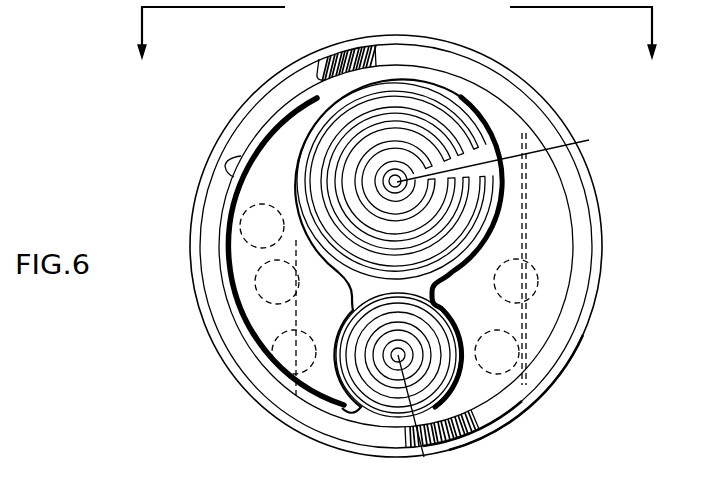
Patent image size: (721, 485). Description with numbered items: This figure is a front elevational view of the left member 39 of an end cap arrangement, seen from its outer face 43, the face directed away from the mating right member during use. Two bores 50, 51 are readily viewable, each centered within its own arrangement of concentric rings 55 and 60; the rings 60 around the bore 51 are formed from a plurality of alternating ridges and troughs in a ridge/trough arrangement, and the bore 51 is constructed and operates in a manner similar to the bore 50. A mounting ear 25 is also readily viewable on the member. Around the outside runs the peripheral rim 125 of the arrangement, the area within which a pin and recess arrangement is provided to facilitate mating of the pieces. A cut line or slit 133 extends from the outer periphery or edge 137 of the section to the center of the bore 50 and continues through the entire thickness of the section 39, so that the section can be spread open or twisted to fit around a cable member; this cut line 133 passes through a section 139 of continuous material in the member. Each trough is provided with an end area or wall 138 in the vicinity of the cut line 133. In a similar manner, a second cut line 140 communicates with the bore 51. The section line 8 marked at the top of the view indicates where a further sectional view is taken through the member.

The section line 8- 8 is at (397, 32).
The mounting ear 25 is at (277, 103).
The left member 39 is at (598, 197).
The outer face 43 is at (560, 256).
The bore 50 is at (390, 192).
The bore 51 is at (408, 367).
The concentric rings 55 is at (503, 210).
The concentric rings 60 is at (459, 317).
The peripheral rim 125 is at (580, 175).
The cut line 133 is at (551, 133).
The outer periphery 137 is at (483, 52).
The end wall 138 is at (481, 152).
The section of continuous material 139 is at (509, 155).
The cut line 140 is at (472, 438).